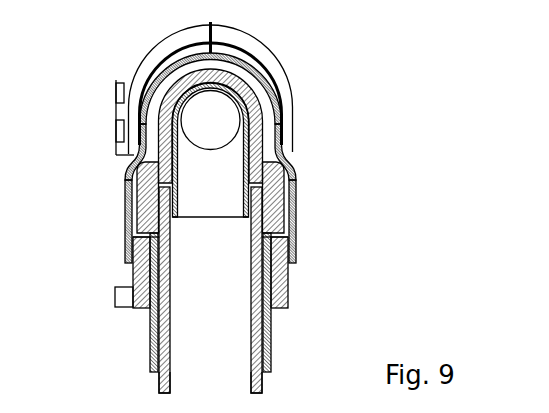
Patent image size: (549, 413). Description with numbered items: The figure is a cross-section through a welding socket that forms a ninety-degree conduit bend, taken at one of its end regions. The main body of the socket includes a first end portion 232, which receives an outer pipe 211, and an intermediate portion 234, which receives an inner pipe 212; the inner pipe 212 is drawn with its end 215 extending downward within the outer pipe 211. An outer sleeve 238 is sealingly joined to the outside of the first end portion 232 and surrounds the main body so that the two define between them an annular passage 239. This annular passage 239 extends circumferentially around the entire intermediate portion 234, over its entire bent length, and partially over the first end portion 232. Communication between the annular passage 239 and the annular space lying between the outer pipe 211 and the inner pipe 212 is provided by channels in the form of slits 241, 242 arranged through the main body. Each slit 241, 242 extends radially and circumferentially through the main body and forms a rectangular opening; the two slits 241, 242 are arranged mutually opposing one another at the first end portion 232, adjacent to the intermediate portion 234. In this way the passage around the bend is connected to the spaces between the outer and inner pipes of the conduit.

The outer pipe 211 is at (151, 345).
The inner pipe 212 is at (197, 270).
The tube end 215 is at (291, 378).
The first end portion 232 is at (133, 264).
The intermediate portion 234 is at (163, 76).
The outer sleeve 238 is at (125, 185).
The annular passage 239 is at (136, 157).
The slit 241 is at (137, 213).
The slit 242 is at (291, 234).